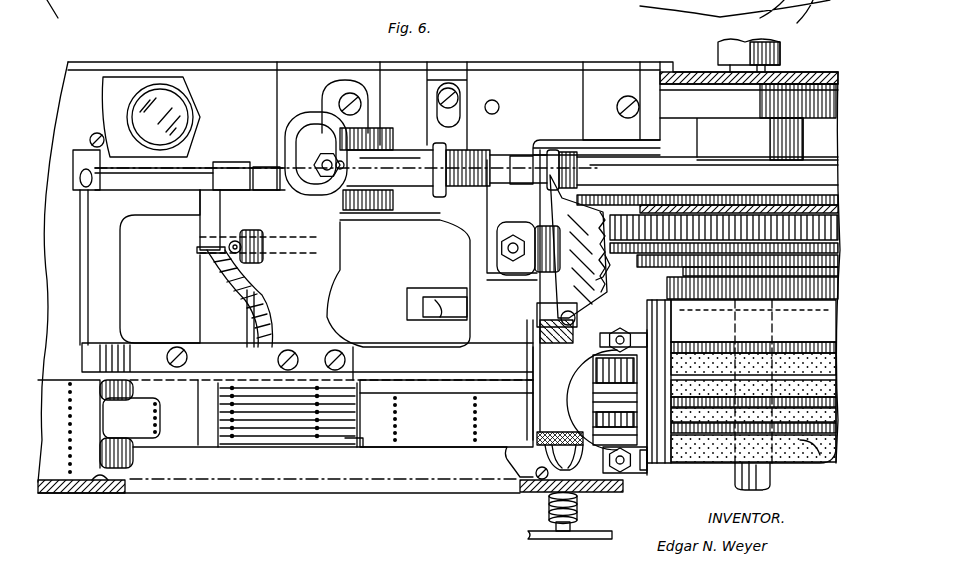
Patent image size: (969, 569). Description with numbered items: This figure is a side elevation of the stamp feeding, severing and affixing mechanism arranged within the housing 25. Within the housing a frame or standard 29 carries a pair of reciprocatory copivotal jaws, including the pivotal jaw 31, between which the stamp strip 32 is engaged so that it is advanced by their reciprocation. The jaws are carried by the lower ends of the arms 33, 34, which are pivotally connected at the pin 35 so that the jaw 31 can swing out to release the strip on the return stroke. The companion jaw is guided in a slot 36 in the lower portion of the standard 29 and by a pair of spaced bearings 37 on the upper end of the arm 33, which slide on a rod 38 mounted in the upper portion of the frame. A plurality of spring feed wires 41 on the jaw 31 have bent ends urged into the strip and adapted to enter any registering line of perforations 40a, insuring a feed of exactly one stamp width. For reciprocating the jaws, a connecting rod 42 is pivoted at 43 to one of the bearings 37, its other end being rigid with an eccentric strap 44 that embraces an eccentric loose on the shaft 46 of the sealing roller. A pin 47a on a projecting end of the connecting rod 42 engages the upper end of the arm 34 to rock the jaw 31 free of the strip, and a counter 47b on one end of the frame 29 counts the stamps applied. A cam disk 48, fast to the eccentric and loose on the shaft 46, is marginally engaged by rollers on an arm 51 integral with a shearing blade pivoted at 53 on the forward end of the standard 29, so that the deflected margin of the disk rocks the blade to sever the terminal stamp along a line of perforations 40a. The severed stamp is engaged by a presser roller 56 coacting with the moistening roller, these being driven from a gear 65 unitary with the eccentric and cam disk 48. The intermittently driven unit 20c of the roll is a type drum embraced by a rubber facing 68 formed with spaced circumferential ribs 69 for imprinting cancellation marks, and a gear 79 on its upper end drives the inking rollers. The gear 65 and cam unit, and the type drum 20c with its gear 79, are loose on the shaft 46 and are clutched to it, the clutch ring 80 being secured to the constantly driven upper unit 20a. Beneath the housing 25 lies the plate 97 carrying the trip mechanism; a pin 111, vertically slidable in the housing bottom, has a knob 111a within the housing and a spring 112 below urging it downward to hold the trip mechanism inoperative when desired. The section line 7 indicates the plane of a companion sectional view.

The section line 7- 7 is at (227, 500).
The upper unit 20a is at (741, 381).
The intermediate intermittently driven unit 20c is at (741, 372).
The housing 25 is at (237, 88).
The frame or standard 29 is at (103, 290).
The jaw 31 is at (202, 410).
The stamp strip 32 is at (100, 480).
The arm 33 is at (260, 303).
The arm 34 is at (235, 297).
The pivot pin 35 is at (230, 250).
The slot 36 is at (463, 380).
The bearings 37 is at (230, 162).
The rod 38 is at (260, 180).
The perforations 40a is at (430, 508).
The spring feed wires 41 is at (295, 430).
The connecting rod 42 is at (503, 167).
The pivotal connection 43 is at (383, 160).
The eccentric strap 44 is at (672, 173).
The shaft 46 is at (770, 475).
The pin 47a is at (340, 172).
The counter 47b is at (118, 86).
The cam disk 48 is at (805, 185).
The arm 51 is at (605, 255).
The pivot 53 is at (512, 258).
The presser roller 56 is at (602, 373).
The gear 65 is at (670, 230).
The rubber facing 68 is at (797, 448).
The circumferential ribs 69 is at (740, 380).
The gear 79 is at (707, 340).
The clutch ring 80 is at (676, 284).
The plate 97 is at (595, 539).
The pin 111 is at (572, 527).
The knob 111a is at (638, 473).
The spring 112 is at (580, 505).